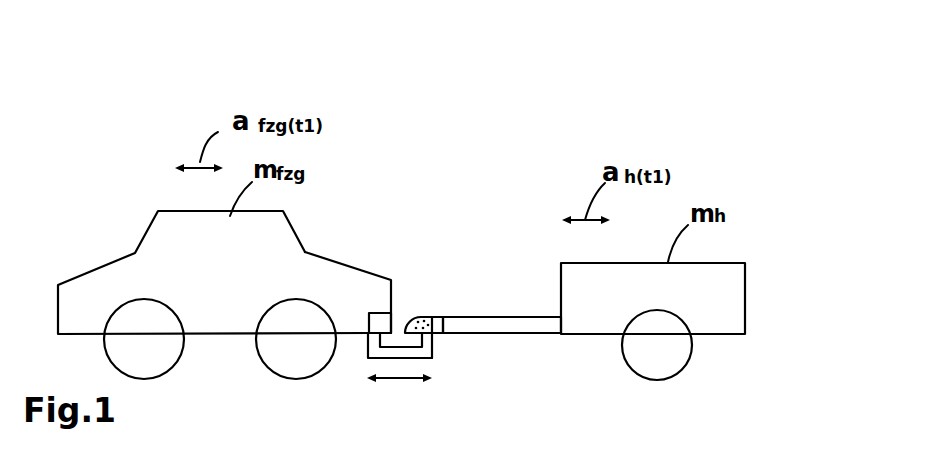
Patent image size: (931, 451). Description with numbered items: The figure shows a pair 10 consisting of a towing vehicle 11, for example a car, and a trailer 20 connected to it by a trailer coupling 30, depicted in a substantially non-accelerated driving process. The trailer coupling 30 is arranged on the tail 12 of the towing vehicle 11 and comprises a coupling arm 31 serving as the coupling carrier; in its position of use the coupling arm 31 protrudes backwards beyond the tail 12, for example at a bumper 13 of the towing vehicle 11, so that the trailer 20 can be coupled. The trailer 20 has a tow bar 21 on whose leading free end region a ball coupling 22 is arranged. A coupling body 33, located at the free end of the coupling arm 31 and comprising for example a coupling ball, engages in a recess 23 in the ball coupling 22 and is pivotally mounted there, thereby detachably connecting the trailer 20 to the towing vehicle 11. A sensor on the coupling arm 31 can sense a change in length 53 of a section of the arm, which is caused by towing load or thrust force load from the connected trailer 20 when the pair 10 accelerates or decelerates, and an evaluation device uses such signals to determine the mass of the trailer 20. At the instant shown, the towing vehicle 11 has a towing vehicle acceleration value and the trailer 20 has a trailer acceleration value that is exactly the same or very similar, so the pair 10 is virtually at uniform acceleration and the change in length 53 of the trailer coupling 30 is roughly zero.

The pair 10 is at (745, 80).
The towing vehicle 11 is at (229, 260).
The tail 12 is at (347, 277).
The bumper 13 is at (383, 322).
The trailer 20 is at (600, 287).
The tow bar 21 is at (483, 318).
The ball coupling 22 is at (433, 336).
The recess 23 is at (433, 336).
The trailer coupling 30 is at (357, 357).
The coupling arm 31 is at (427, 359).
The coupling body 33 is at (427, 313).
The change in length 53 is at (393, 379).